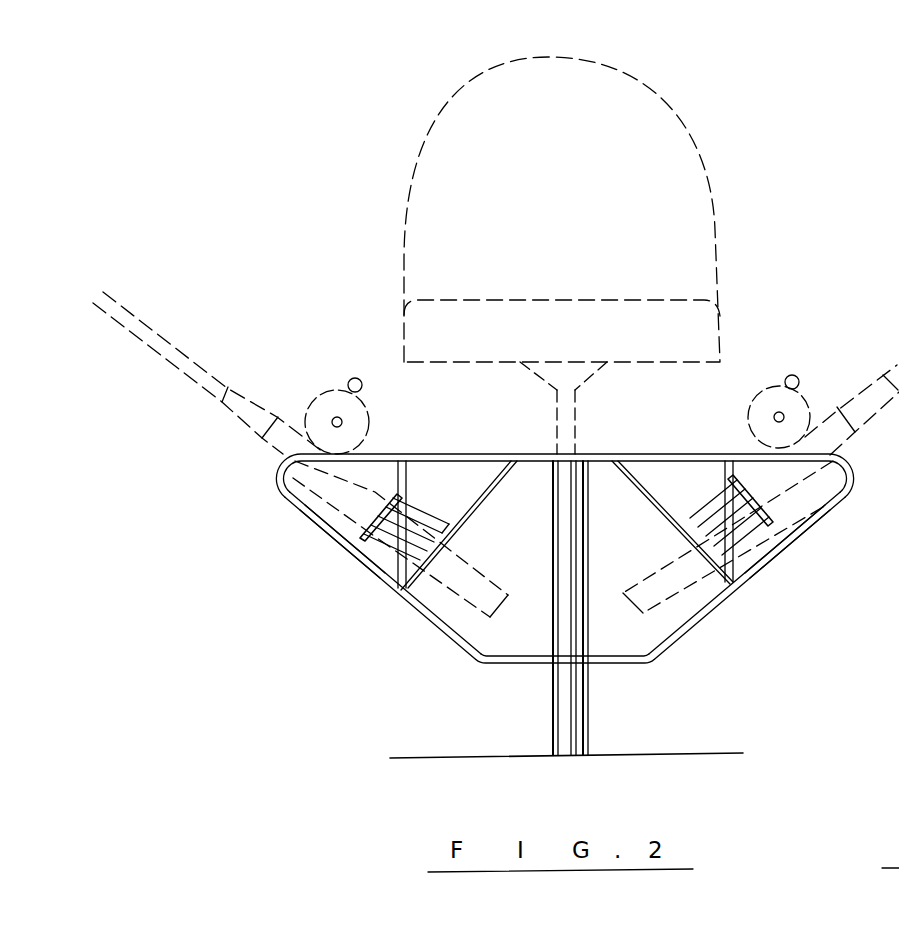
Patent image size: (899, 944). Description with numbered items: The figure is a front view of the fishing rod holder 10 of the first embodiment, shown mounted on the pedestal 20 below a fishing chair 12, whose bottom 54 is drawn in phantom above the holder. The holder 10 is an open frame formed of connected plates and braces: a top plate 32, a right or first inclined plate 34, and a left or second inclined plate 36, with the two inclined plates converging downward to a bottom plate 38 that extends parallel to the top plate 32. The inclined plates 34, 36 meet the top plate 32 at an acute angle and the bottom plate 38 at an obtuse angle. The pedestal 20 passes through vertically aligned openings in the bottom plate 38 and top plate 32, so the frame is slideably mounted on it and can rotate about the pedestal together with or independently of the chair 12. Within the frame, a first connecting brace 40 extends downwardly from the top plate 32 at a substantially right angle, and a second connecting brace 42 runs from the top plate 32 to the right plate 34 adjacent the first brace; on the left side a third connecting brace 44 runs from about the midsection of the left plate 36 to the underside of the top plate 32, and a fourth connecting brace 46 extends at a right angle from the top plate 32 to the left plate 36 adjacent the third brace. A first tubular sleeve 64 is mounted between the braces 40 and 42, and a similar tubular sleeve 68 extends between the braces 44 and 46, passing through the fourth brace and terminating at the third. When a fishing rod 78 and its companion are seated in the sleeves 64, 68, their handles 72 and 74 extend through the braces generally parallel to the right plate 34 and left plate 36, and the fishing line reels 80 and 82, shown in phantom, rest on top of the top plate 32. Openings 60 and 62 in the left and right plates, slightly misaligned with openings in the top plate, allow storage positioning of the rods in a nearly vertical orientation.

The fishing rod holder 10 is at (712, 449).
The fishing chair 12 is at (688, 122).
The pedestal 20 is at (578, 412).
The top plate 32 is at (478, 455).
The right inclined plate 34 is at (702, 612).
The left inclined plate 36 is at (456, 640).
The bottom plate 38 is at (615, 665).
The first connecting brace 40 is at (724, 475).
The second connecting brace 42 is at (660, 518).
The third connecting brace 44 is at (489, 498).
The fourth connecting brace 46 is at (406, 482).
The bottom of the chair 54 is at (706, 362).
The opening in left plate 60 is at (328, 538).
The opening in right plate 62 is at (812, 515).
The first tubular sleeve 64 is at (772, 540).
The second tubular sleeve 68 is at (415, 527).
The fishing rod handle 72 is at (650, 607).
The fishing rod handle 74 is at (478, 578).
The fishing rod 78 is at (200, 366).
The fishing line reel 80 is at (799, 378).
The fishing line reel 82 is at (346, 383).